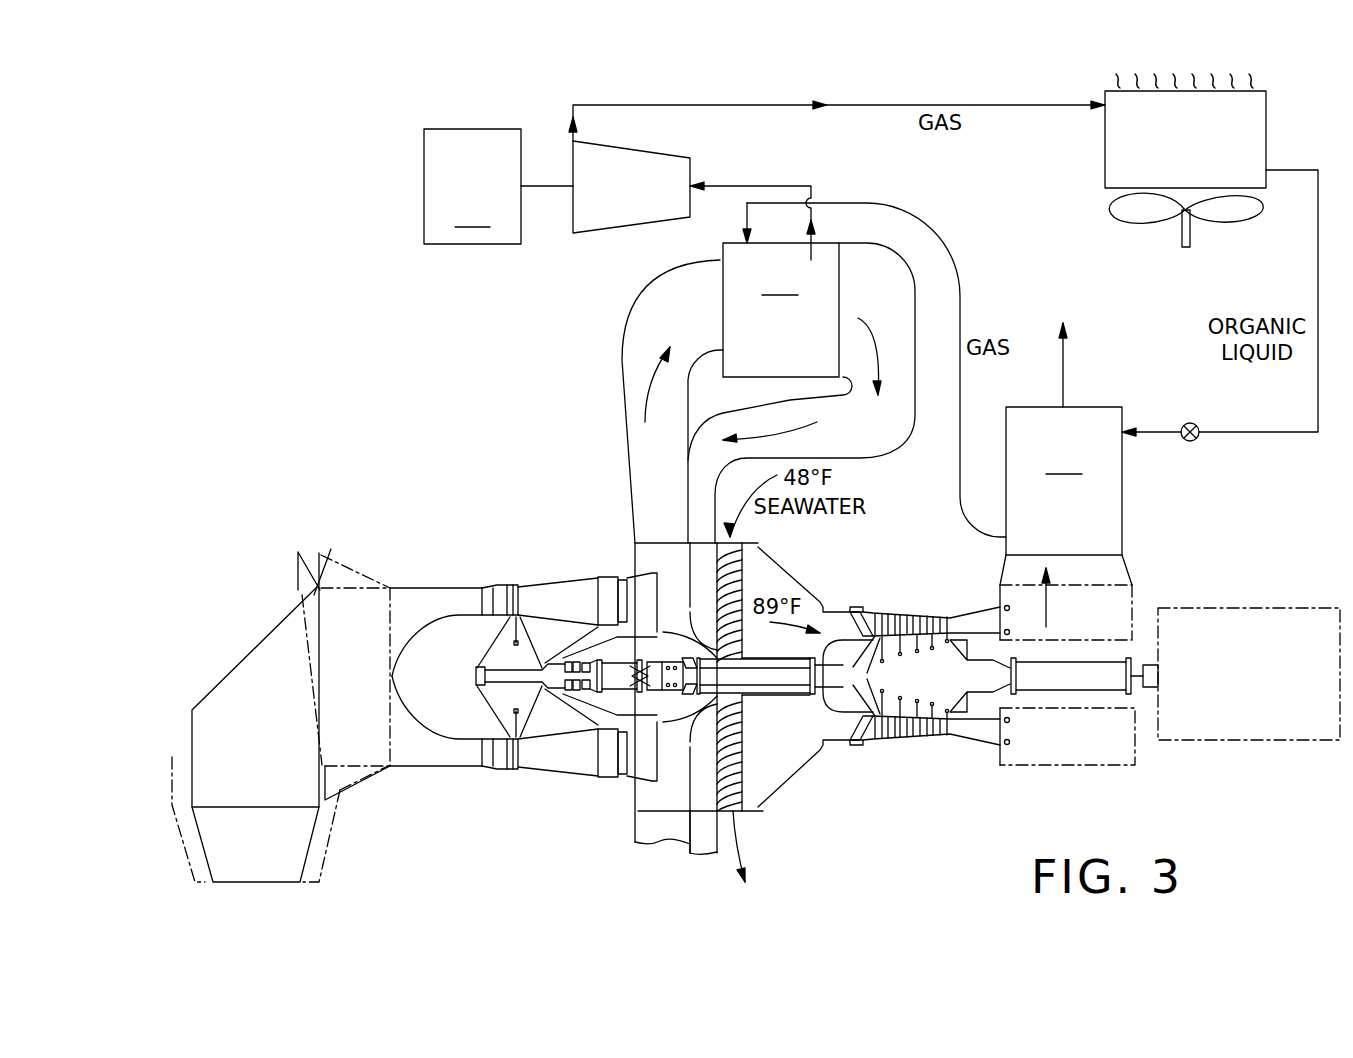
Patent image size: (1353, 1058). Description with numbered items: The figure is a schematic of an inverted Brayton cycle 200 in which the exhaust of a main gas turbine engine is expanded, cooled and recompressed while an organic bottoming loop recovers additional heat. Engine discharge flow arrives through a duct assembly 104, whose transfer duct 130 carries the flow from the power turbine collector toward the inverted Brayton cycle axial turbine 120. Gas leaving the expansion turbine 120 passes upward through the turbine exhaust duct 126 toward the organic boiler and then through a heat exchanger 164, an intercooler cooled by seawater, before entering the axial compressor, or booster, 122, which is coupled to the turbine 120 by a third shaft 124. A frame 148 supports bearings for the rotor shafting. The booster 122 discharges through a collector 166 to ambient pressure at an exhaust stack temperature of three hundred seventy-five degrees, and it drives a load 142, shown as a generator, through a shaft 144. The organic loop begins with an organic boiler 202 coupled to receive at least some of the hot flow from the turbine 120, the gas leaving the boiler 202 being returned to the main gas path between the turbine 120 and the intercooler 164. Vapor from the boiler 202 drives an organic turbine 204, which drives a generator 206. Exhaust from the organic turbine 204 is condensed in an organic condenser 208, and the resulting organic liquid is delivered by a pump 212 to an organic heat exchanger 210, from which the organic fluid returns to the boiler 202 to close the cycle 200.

The duct assembly 104 is at (185, 688).
The axial turbine 120 is at (508, 575).
The axial compressor 122 is at (908, 605).
The third shaft 124 is at (758, 683).
The exhaust duct 126 is at (658, 540).
The transfer duct 130 is at (298, 832).
The load 142 is at (1235, 740).
The shaft 144 is at (1132, 693).
The frame 148 is at (598, 757).
The heat exchanger 164 is at (733, 585).
The collector 166 is at (1135, 597).
The inverted Brayton cycle 200 is at (437, 465).
The organic boiler 202 is at (781, 310).
The organic turbine 204 is at (615, 233).
The generator 206 is at (498, 186).
The organic condenser 208 is at (1105, 169).
The organic heat exchanger 210 is at (1064, 439).
The pump 212 is at (1190, 441).